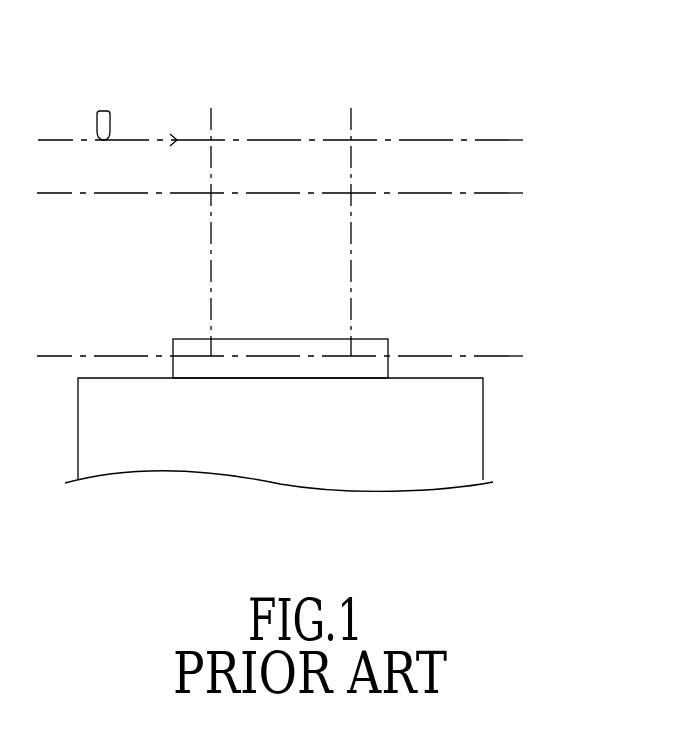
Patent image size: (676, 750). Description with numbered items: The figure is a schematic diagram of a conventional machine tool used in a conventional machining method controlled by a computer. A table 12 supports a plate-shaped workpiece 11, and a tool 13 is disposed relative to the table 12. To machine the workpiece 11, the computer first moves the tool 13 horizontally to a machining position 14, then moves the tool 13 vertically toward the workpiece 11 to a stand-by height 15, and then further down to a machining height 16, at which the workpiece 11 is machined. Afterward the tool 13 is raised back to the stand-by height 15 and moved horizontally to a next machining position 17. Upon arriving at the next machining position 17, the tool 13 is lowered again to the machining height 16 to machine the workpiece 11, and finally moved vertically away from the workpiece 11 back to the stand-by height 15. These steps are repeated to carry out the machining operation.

The workpiece 11 is at (372, 346).
The table 12 is at (465, 428).
The tool 13 is at (103, 126).
The machining position 14 is at (211, 125).
The stand-by height 15 is at (510, 192).
The machining height 16 is at (510, 355).
The next machining position 17 is at (351, 125).